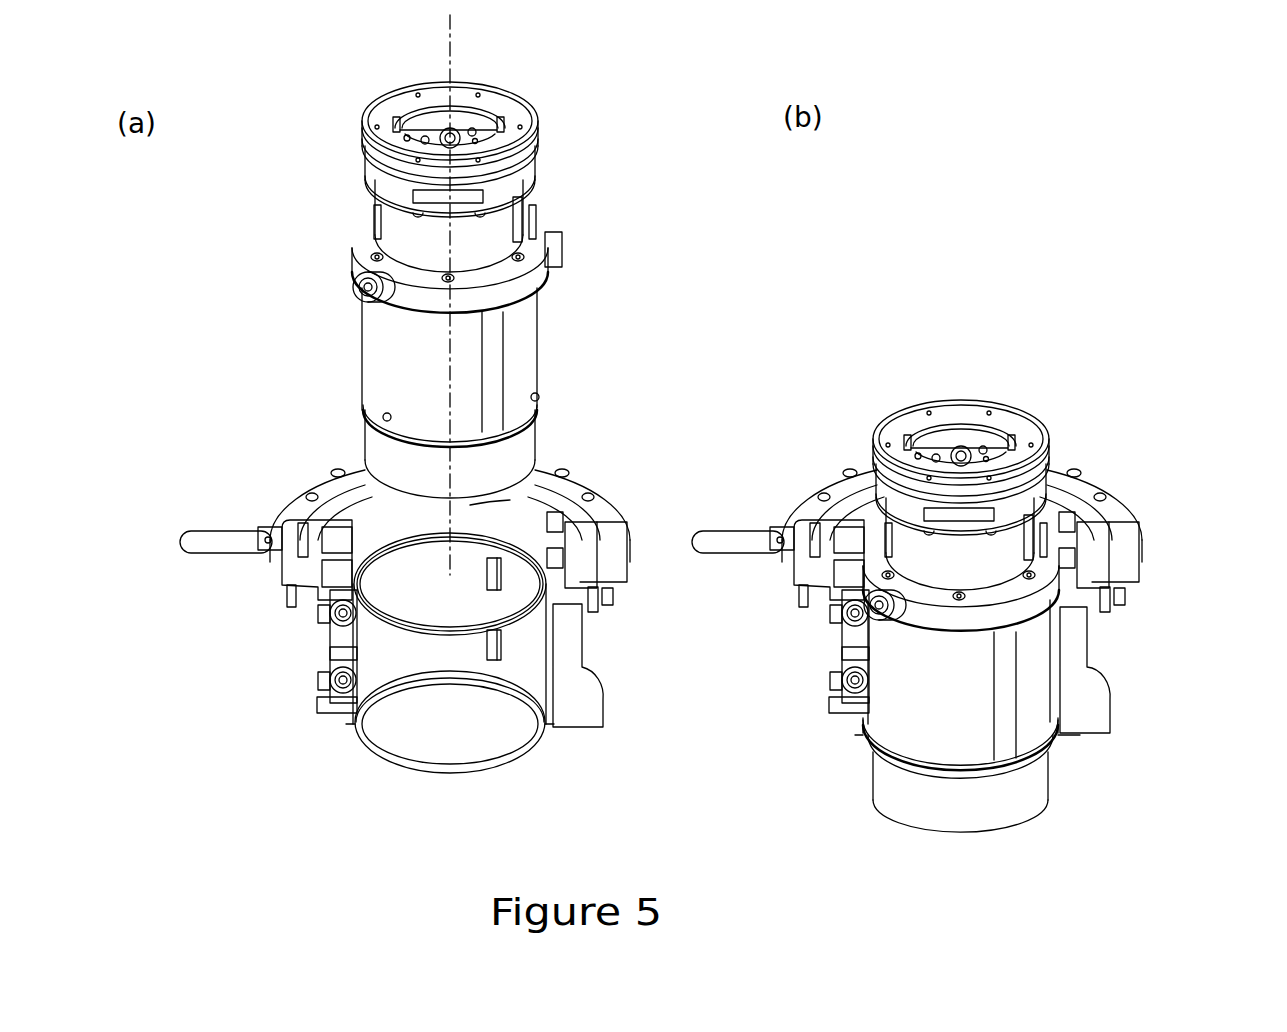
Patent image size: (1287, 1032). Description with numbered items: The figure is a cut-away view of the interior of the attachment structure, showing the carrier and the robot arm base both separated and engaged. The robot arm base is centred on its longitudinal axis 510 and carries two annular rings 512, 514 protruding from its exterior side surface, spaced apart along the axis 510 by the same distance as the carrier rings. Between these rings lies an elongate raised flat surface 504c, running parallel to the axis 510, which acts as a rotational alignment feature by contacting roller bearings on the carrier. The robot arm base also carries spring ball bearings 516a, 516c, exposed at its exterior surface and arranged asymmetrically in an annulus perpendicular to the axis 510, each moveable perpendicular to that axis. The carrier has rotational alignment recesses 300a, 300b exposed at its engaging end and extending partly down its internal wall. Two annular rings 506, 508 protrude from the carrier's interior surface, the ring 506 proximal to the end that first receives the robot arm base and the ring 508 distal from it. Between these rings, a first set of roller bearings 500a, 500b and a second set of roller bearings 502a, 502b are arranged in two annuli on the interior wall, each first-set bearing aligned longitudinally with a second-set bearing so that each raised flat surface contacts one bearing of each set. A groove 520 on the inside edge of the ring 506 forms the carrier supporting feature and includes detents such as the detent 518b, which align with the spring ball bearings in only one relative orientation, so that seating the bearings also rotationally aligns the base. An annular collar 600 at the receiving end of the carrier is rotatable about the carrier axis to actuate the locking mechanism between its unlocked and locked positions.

The longitudinal axis of the robot arm base 510 is at (454, 30).
The annular ring 512 is at (533, 305).
The raised flat surface 504c is at (495, 357).
The spring ball bearing 516a is at (385, 414).
The spring ball bearing 516c is at (540, 398).
The annular ring 514 is at (540, 420).
The detent 518b is at (503, 545).
The recess 300a is at (370, 513).
The recess 300b is at (567, 560).
The groove 520 is at (342, 558).
The roller bearing 500a is at (330, 615).
The roller bearing 502a is at (330, 688).
The roller bearing 500b is at (487, 572).
The roller bearing 502b is at (487, 645).
The annular ring 506 is at (560, 615).
The annular ring 508 is at (543, 748).
The collar 600 is at (1095, 488).